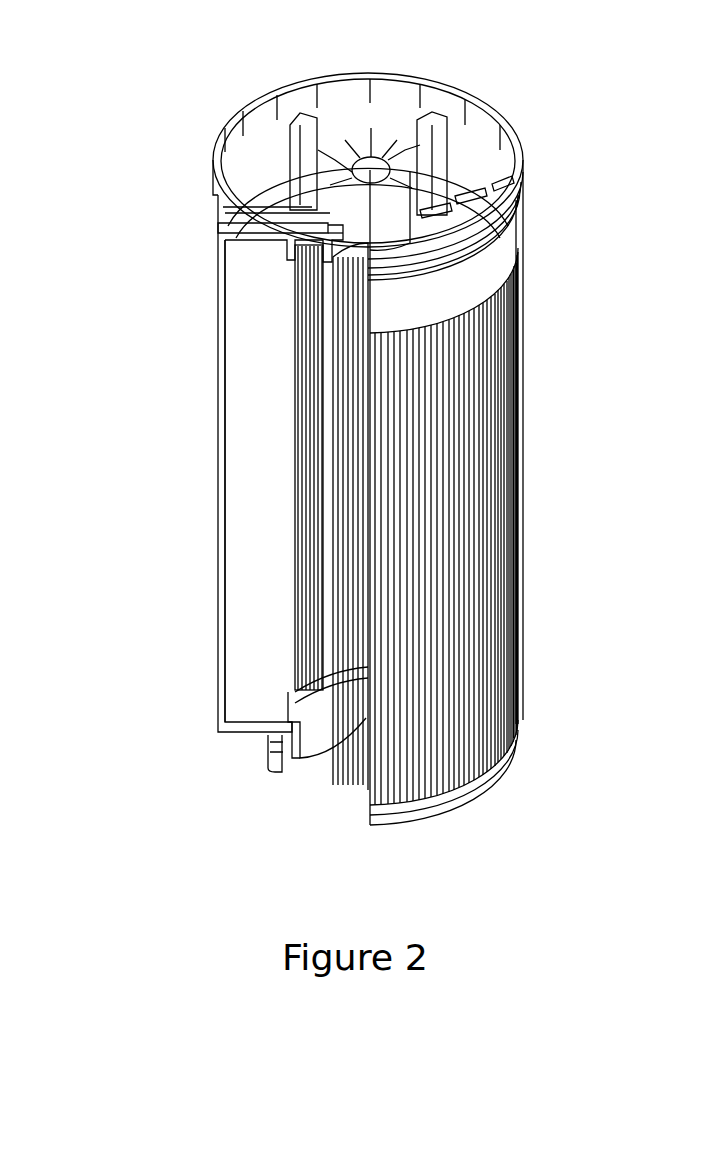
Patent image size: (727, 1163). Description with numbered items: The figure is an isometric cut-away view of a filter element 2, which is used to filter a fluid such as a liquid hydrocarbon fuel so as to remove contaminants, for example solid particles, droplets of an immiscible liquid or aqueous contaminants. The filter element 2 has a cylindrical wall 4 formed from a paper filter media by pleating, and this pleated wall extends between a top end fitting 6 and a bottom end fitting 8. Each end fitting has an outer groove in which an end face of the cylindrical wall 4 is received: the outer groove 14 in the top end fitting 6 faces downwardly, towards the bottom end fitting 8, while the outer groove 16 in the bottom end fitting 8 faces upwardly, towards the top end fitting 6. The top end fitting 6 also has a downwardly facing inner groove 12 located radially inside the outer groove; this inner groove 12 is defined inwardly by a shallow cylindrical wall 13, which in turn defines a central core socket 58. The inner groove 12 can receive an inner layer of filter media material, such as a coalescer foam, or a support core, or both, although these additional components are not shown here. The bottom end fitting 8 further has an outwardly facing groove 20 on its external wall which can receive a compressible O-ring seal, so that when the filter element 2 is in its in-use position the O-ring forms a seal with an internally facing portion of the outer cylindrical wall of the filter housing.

The filter element 2 is at (131, 430).
The cylindrical wall 4 is at (520, 372).
The top end fitting 6 is at (520, 183).
The bottom end fitting 8 is at (243, 733).
The inner groove 12 is at (331, 250).
The shallow cylindrical wall 13 is at (332, 272).
The outer groove 14 is at (237, 245).
The outer groove 16 is at (237, 728).
The outwardly facing groove 20 is at (262, 762).
The central core socket 58 is at (347, 232).